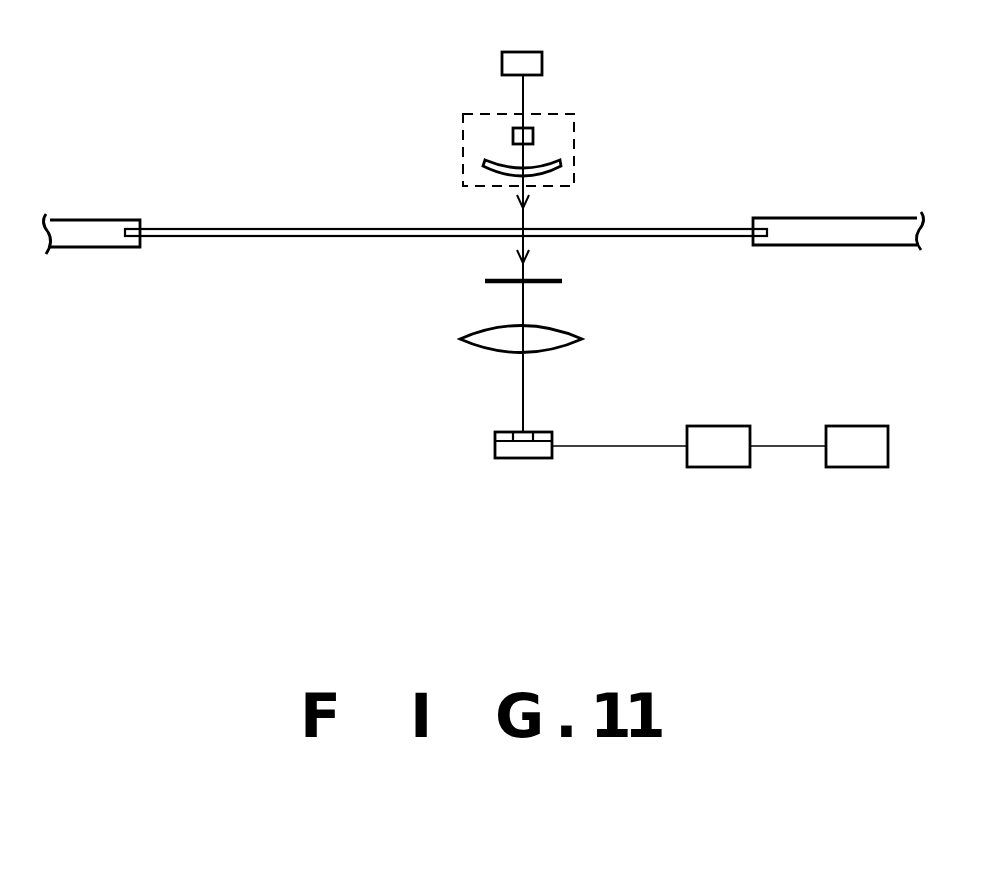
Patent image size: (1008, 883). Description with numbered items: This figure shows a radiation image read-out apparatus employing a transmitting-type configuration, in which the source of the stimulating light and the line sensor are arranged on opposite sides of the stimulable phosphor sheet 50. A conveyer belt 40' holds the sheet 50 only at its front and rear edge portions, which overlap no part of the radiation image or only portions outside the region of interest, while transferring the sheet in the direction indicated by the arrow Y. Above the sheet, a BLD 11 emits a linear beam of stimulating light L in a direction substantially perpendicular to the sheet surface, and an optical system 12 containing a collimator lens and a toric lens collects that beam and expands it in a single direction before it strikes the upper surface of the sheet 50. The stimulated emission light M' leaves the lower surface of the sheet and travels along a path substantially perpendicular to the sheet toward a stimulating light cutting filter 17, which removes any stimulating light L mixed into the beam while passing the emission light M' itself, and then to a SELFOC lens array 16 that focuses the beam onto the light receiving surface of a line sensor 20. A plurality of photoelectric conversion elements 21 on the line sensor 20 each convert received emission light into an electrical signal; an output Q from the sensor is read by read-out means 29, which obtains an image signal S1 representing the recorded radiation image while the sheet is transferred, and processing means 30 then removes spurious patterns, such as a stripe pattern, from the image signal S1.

The BLD 11 is at (540, 52).
The optical system 12 is at (574, 114).
The stimulable phosphor sheet 50 is at (675, 227).
The conveyer belt 40' is at (91, 263).
The stimulating light cutting filter 17 is at (553, 277).
The SELFOC lens array 16 is at (567, 335).
The line sensor 20 is at (493, 448).
The photoelectric conversion elements 21 is at (540, 432).
The read-out means 29 is at (718, 446).
The processing means 30 is at (857, 446).
The stimulating light L is at (518, 214).
The stimulated emission light M' is at (464, 290).
The output signal Q is at (602, 446).
The image signal S1 is at (788, 422).
The arrow Y is at (90, 199).